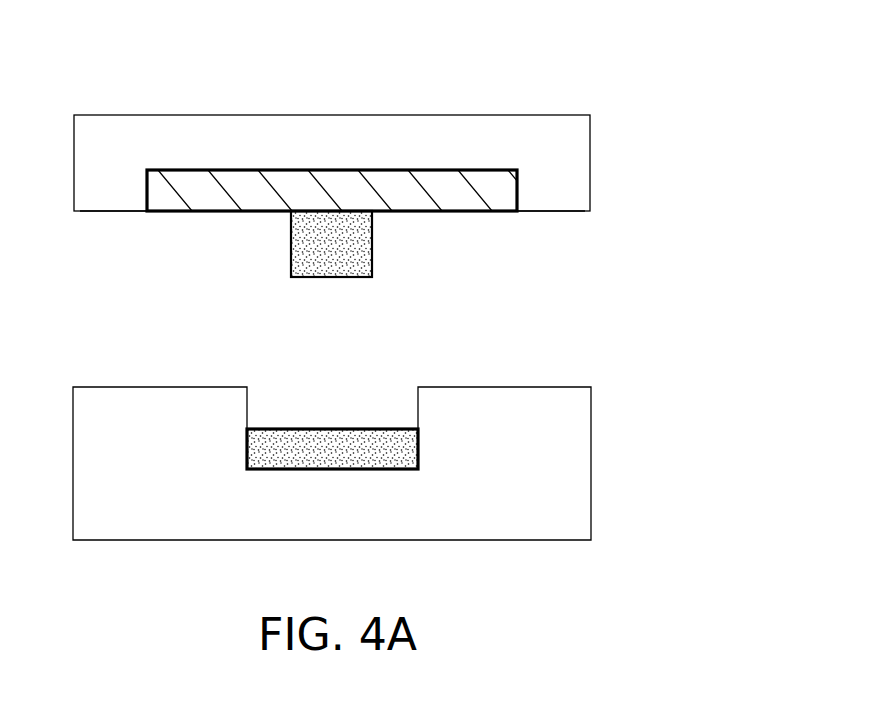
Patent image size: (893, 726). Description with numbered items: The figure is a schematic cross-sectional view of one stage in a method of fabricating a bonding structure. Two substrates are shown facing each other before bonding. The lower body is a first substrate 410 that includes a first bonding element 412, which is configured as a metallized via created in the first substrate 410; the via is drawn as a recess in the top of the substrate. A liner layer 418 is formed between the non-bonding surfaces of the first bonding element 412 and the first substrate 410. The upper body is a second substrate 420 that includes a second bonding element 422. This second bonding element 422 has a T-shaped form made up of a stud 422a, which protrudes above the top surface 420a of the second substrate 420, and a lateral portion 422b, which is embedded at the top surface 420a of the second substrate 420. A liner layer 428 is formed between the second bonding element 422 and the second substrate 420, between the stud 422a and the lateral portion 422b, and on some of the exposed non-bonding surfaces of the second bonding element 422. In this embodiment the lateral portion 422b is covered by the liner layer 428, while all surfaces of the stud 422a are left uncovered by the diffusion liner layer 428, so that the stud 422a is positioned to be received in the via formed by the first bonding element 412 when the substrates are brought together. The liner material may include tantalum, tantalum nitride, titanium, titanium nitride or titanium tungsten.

The first substrate 410 is at (528, 474).
The first bonding element 412 is at (392, 402).
The liner layer 418 is at (418, 450).
The second substrate 420 is at (545, 137).
The top surface 420a is at (543, 212).
The second bonding element 422 is at (712, 142).
The stud 422a is at (350, 245).
The lateral portion 422b is at (493, 190).
The liner layer 428 is at (340, 168).